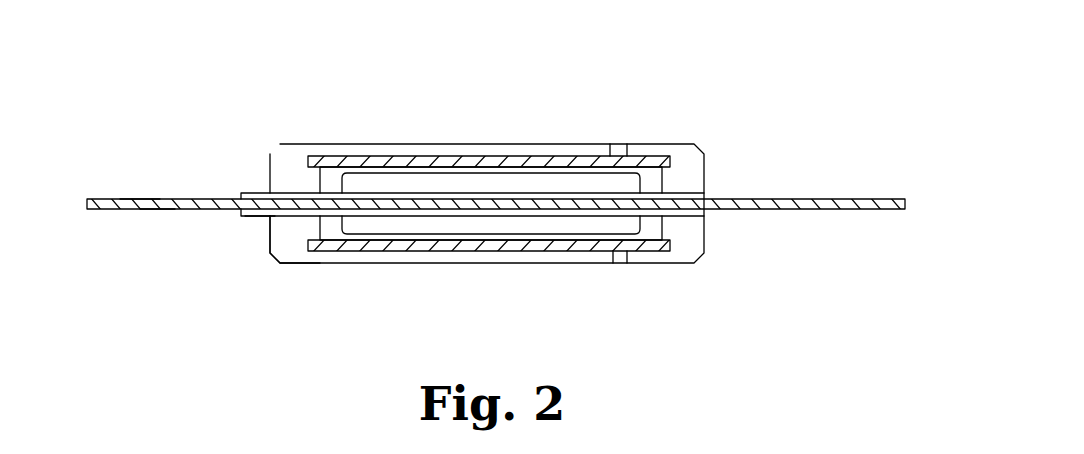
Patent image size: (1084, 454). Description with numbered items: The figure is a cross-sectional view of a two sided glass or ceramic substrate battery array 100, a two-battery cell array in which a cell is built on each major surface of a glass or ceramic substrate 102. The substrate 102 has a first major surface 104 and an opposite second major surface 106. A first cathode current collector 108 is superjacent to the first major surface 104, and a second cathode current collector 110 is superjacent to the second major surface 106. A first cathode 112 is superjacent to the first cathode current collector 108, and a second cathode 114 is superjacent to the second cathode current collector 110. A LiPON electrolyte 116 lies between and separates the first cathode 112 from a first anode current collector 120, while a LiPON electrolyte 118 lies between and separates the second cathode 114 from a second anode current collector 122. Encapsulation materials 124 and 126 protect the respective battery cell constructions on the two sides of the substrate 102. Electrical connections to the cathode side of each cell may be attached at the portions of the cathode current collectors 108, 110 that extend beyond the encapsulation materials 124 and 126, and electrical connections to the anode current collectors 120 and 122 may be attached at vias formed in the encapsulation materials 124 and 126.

The two sided glass or ceramic substrate battery array 100 is at (698, 72).
The glass or ceramic substrate 102 is at (852, 211).
The first major surface 104 is at (141, 188).
The second major surface 106 is at (153, 220).
The first cathode current collector 108 is at (258, 192).
The second cathode current collector 110 is at (258, 217).
The first cathode 112 is at (388, 183).
The second cathode 114 is at (385, 225).
The LiPON electrolyte 116 is at (315, 179).
The LiPON electrolyte 118 is at (313, 223).
The first anode current collector 120 is at (528, 160).
The second anode current collector 122 is at (523, 252).
The encapsulation material 124 is at (620, 152).
The encapsulation material 126 is at (618, 258).